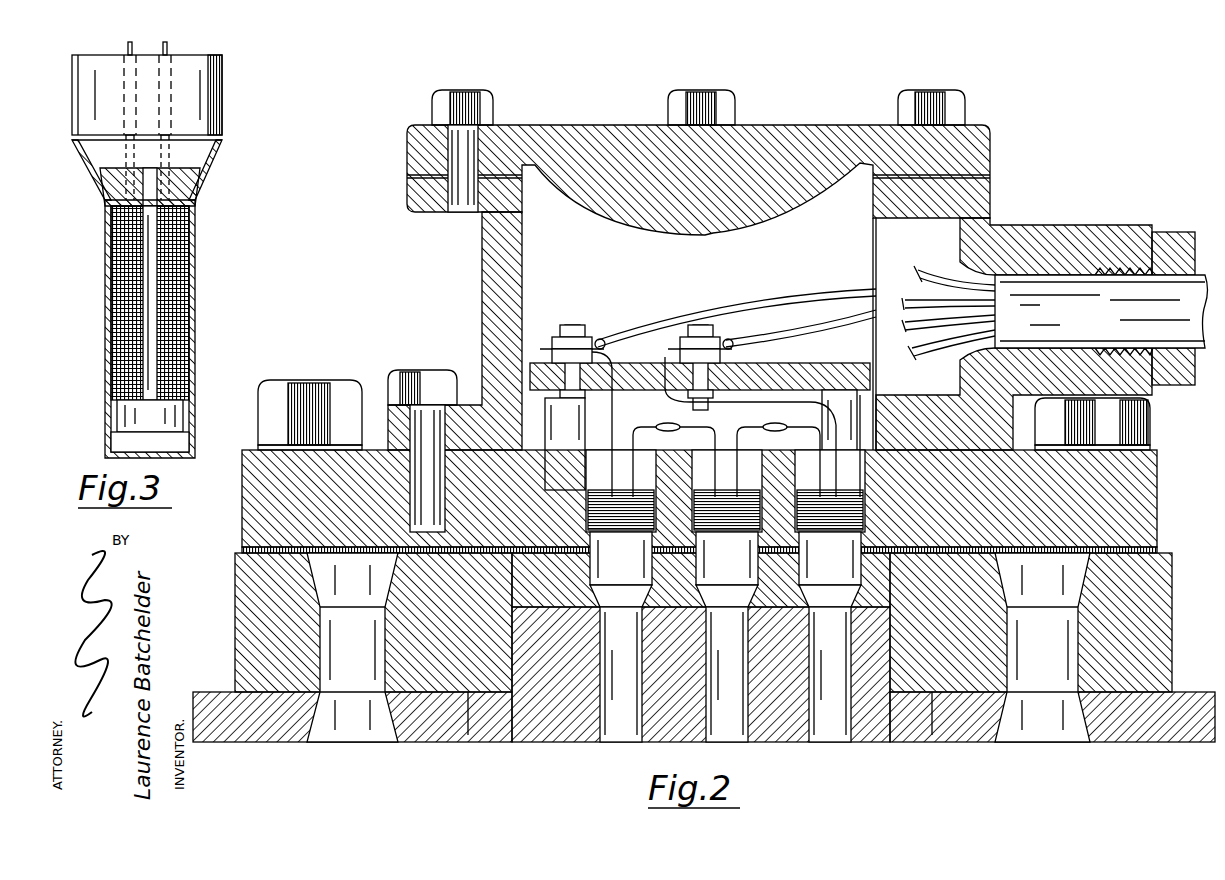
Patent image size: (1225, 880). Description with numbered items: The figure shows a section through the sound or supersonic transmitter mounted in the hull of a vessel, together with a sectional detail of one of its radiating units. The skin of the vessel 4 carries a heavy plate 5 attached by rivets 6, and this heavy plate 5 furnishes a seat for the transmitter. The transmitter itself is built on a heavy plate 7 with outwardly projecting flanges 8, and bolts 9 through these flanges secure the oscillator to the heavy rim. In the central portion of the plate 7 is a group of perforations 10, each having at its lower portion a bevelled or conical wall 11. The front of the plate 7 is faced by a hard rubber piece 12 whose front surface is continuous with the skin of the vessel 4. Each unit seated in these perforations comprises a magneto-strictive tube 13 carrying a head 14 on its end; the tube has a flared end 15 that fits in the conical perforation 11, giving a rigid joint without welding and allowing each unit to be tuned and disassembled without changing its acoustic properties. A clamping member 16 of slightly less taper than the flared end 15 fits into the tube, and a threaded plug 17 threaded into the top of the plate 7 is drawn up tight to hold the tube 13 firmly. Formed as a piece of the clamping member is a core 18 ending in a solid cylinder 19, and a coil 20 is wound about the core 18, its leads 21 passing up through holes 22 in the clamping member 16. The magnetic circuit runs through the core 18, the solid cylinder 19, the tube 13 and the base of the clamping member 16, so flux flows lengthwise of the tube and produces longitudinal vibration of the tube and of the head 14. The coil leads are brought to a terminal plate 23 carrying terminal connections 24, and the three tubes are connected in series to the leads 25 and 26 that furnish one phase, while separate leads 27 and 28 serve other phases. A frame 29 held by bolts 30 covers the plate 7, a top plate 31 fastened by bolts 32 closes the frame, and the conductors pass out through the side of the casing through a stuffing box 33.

In FIG. 2, the skin of the vessel 4 is at (1190, 742).
In FIG. 2, the heavy plate 5 is at (235, 610).
In FIG. 2, the rivets 6 is at (362, 735).
In FIG. 2, the heavy plate 7 is at (590, 490).
In FIG. 2, the outwardly projecting flanges 8 is at (242, 505).
In FIG. 2, the bolts 9 is at (310, 380).
In FIG. 2, the perforations 10 is at (600, 462).
In FIG. 2, the bevelled or conical wall 11 is at (592, 598).
In FIG. 2, the hard rubber piece 12 is at (701, 674).
In FIG. 3, the magneto-strictive tube 13 is at (195, 318).
In FIG. 2, the magneto-strictive tube 13 is at (725, 674).
In FIG. 3, the head 14 is at (170, 450).
In FIG. 3, the flared end 15 is at (200, 175).
In FIG. 3, the clamping member 16 is at (222, 105).
In FIG. 2, the clamping member 16 is at (725, 558).
In FIG. 2, the threaded plug 17 is at (592, 518).
In FIG. 3, the core 18 is at (152, 275).
In FIG. 3, the solid cylinder 19 is at (180, 408).
In FIG. 3, the coil 20 is at (180, 285).
In FIG. 3, the leads 21 is at (134, 46).
In FIG. 3, the holes 22 is at (140, 80).
In FIG. 2, the terminal plate 23 is at (775, 366).
In FIG. 2, the terminal connections 24 is at (592, 338).
In FIG. 2, the lead 25 is at (742, 310).
In FIG. 2, the lead 26 is at (847, 327).
In FIG. 2, the separate lead 27 is at (915, 272).
In FIG. 2, the separate lead 28 is at (932, 276).
In FIG. 2, the frame 29 is at (482, 335).
In FIG. 2, the bolts 30 is at (420, 370).
In FIG. 2, the plate 31 is at (545, 125).
In FIG. 2, the bolts 32 is at (455, 92).
In FIG. 2, the stuffing box 33 is at (1188, 232).